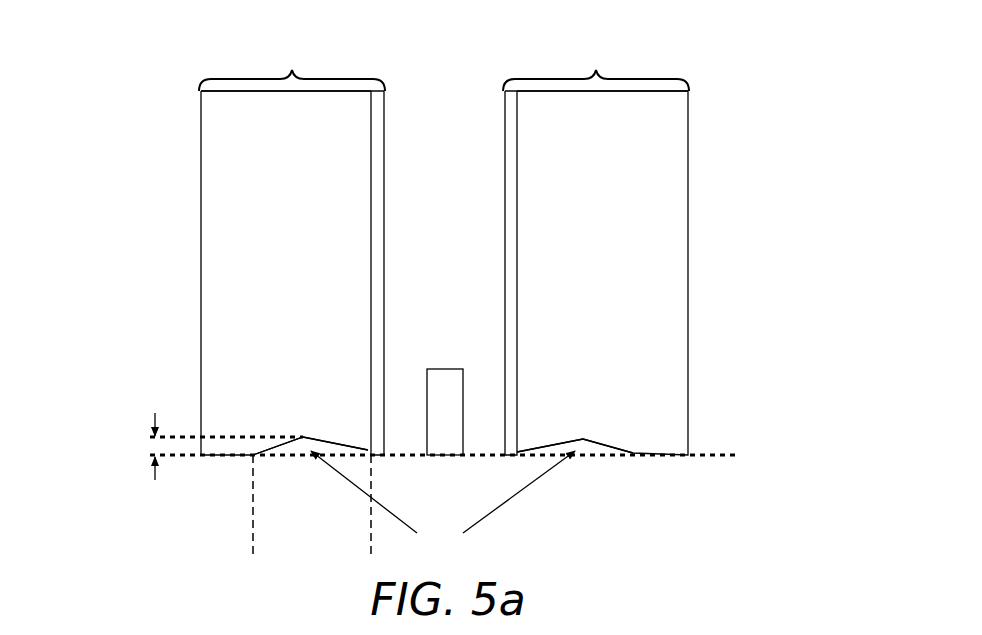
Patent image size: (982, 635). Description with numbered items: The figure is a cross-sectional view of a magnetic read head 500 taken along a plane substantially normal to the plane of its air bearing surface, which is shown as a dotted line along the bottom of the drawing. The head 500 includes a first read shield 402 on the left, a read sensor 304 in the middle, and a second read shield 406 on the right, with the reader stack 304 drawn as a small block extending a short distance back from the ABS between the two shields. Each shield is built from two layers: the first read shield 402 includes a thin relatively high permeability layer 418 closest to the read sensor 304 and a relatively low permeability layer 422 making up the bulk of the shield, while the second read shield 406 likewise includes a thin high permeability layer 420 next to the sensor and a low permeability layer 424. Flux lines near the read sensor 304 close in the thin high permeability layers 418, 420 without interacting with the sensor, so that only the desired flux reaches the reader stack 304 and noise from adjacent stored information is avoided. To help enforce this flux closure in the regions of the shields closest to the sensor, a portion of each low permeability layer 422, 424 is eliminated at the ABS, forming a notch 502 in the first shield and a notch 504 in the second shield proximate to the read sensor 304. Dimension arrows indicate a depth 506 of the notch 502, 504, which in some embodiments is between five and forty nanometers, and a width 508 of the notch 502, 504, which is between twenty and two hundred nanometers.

The head 500 is at (445, 299).
The first read shield 402 is at (332, 249).
The second read shield 406 is at (553, 248).
The thin high permeability layer 418 is at (377, 110).
The thin high permeability layer 420 is at (513, 99).
The low permeability layer 422 is at (267, 252).
The low permeability layer 424 is at (570, 253).
The read sensor 304 is at (447, 373).
The notch 502 is at (296, 447).
The notch 504 is at (597, 448).
The depth of notch 506 is at (149, 450).
The width of notch 508 is at (255, 542).